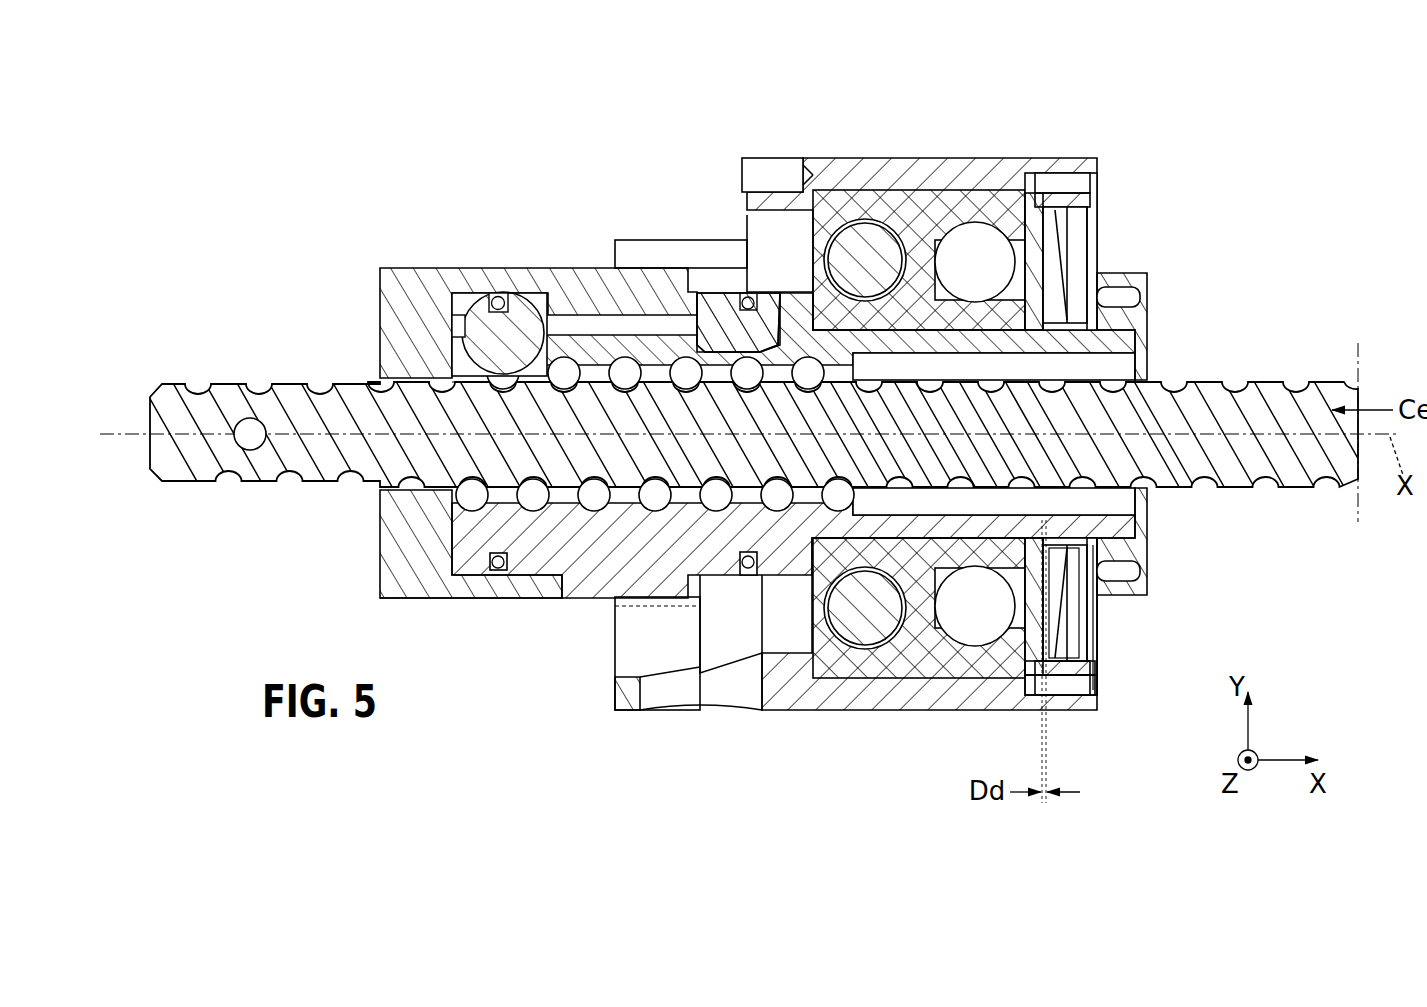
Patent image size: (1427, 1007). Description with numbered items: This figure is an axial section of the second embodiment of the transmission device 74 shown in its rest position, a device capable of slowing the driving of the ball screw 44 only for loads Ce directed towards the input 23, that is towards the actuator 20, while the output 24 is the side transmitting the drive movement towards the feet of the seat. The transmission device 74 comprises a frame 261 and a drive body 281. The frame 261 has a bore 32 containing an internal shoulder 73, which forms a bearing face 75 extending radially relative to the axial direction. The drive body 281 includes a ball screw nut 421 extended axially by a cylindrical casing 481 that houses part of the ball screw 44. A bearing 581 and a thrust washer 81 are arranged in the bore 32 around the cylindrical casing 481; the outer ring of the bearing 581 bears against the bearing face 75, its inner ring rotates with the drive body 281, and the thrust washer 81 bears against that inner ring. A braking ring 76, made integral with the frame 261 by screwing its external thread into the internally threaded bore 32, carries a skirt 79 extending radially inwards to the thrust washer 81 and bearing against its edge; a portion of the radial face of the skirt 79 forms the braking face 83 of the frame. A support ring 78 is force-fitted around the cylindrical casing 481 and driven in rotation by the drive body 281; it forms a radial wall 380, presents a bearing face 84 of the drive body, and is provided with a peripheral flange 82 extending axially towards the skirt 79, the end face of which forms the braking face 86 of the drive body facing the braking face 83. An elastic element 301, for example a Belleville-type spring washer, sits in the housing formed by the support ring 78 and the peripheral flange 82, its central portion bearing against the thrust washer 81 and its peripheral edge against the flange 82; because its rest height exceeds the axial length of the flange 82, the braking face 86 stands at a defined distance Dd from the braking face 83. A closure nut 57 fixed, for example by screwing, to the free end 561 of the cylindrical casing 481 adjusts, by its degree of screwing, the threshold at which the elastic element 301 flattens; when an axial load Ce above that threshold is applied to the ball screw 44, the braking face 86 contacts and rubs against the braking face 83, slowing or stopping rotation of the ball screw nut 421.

The actuator 20 is at (375, 318).
The input 23 is at (718, 170).
The output 24 is at (1158, 143).
The bore 32 is at (665, 652).
The ball screw 44 is at (1320, 380).
The closure nut 57 is at (1147, 330).
The internal shoulder 73 is at (810, 250).
The bearing face 75 is at (810, 250).
The transmission device 74 is at (693, 757).
The braking ring 76 is at (1068, 165).
The support ring 78 is at (1065, 300).
The skirt 79 is at (1020, 180).
The thrust washer 81 is at (1032, 305).
The peripheral flange 82 is at (1067, 660).
The braking face of the frame 83 is at (1027, 660).
The bearing face of the drive body 84 is at (1085, 230).
The braking face of the drive body 86 is at (1032, 180).
The frame 261 is at (803, 158).
The drive body 281 is at (562, 600).
The elastic element 301 is at (1052, 587).
The radial wall 380 is at (1098, 633).
The ball screw nut 421 is at (567, 266).
The cylindrical casing 481 is at (862, 523).
The free end 561 is at (1167, 547).
The bearing 581 is at (862, 205).